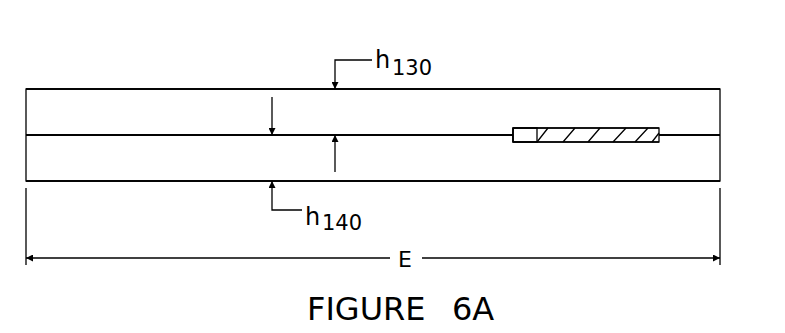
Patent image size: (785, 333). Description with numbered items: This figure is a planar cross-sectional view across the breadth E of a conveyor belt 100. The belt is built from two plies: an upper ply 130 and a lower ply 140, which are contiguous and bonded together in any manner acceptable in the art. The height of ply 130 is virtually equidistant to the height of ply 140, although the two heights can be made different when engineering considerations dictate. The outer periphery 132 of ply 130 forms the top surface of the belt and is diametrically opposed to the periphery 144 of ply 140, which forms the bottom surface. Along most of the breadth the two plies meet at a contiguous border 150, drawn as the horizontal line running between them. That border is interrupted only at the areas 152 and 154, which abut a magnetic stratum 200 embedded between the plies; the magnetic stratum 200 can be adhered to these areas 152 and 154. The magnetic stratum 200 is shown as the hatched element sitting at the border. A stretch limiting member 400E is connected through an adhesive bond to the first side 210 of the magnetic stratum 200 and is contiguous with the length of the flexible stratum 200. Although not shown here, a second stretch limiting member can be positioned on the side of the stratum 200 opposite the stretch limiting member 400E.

The conveyor belt 100 is at (627, 72).
The ply 130 is at (148, 112).
The periphery of ply 132 is at (202, 89).
The ply 140 is at (148, 158).
The periphery of ply 144 is at (88, 181).
The contiguous border 150 is at (388, 135).
The area abutting the stratum 152 is at (636, 128).
The area abutting the stratum 154 is at (635, 142).
The magnetic stratum 200 is at (605, 133).
The first side of magnetic stratum 210 is at (537, 133).
The stretch limiting member 400E is at (528, 133).